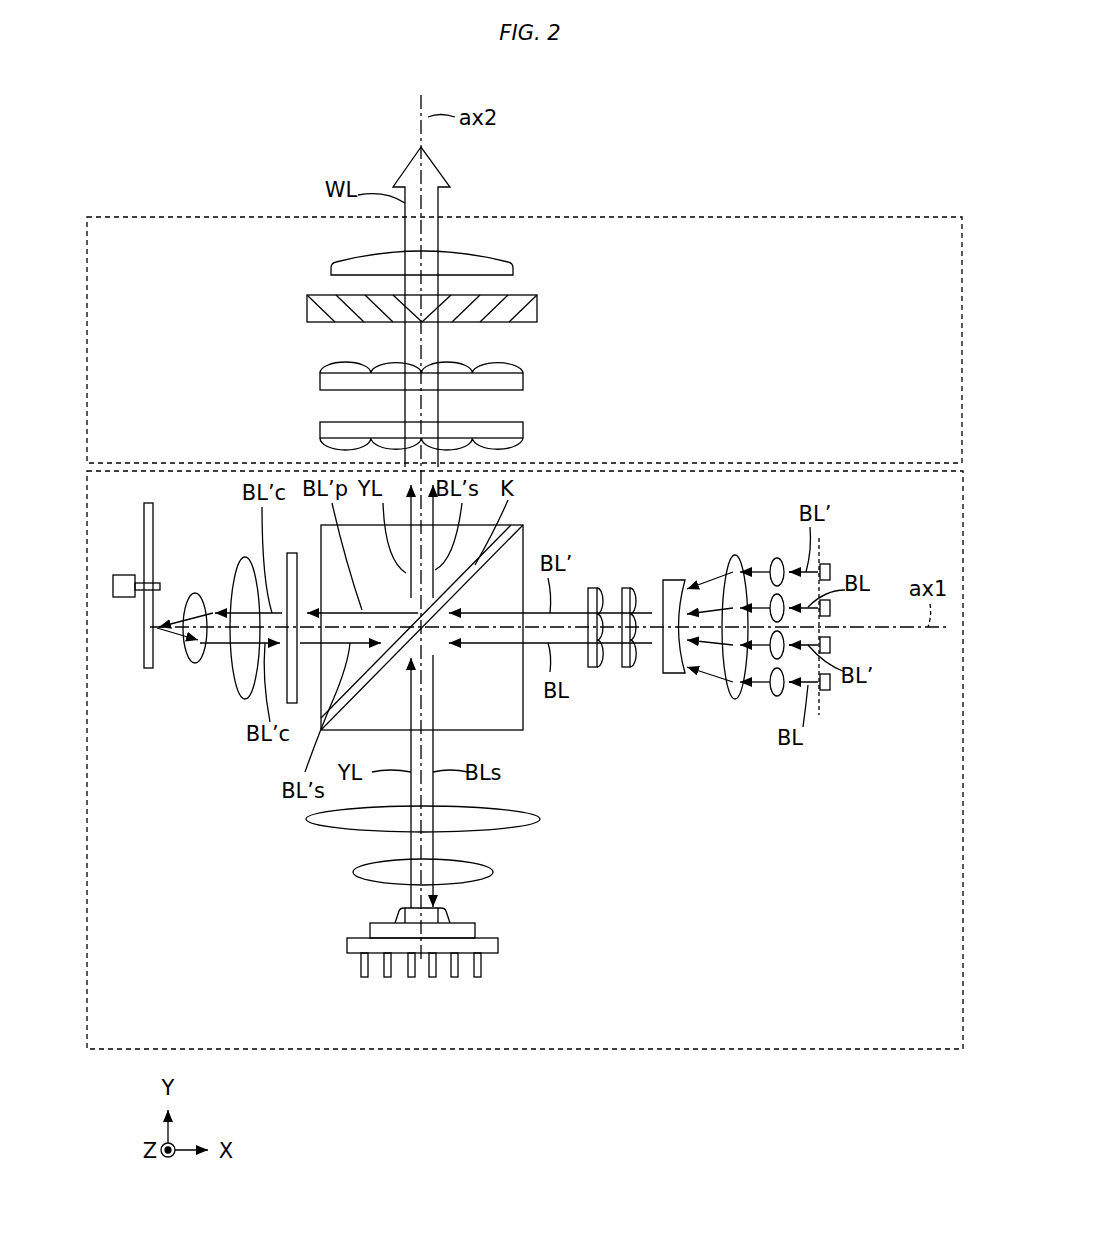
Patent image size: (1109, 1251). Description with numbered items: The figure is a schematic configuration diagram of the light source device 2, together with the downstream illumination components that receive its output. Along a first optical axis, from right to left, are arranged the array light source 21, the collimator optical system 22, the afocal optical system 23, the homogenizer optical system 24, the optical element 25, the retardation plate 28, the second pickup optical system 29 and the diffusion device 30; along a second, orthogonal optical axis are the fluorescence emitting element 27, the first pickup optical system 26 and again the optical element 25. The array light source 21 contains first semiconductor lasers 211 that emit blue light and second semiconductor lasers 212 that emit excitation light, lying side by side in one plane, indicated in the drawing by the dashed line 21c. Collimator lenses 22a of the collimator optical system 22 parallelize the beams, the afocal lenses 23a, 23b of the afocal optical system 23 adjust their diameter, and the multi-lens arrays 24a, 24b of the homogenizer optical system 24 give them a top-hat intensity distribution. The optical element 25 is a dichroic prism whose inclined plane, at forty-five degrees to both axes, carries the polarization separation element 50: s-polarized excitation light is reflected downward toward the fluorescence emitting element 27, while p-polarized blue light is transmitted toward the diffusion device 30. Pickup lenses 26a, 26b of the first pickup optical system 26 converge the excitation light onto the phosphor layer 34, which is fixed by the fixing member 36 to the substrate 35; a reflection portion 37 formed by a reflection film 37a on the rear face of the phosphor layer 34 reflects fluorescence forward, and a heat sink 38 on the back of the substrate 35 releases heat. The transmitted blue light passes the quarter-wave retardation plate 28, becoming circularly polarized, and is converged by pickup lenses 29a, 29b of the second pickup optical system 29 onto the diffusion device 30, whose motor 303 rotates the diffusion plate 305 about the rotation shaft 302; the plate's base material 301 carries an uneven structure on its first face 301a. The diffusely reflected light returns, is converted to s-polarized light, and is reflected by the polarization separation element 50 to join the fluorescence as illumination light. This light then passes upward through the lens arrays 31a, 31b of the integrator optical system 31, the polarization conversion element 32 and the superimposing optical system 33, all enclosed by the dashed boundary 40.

The light source device 2 is at (766, 1050).
The array light source 21 is at (854, 628).
The first semiconductor laser 211 is at (832, 568).
The second semiconductor laser 212 is at (832, 608).
The light emitting element plane 21c is at (823, 703).
The collimator optical system 22 is at (781, 548).
The collimator lens 22a is at (776, 556).
The afocal optical system 23 is at (709, 590).
The afocal lens 23a is at (735, 555).
The afocal lens 23b is at (680, 580).
The homogenizer optical system 24 is at (618, 584).
The multi-lens array 24a is at (628, 588).
The multi-lens array 24b is at (592, 588).
The optical element 25 is at (523, 722).
The polarization separation element 50 is at (500, 542).
The first pickup optical system 26 is at (489, 851).
The pickup lens 26a is at (540, 820).
The pickup lens 26b is at (493, 872).
The fluorescence emitting element 27 is at (439, 959).
The retardation plate 28 is at (292, 553).
The second pickup optical system 29 is at (192, 673).
The pickup lens 29a is at (236, 699).
The pickup lens 29b is at (190, 663).
The diffusion device 30 is at (107, 488).
The base material 301 is at (153, 537).
The first face 301a is at (153, 512).
The rotation shaft 302 is at (158, 584).
The motor 303 is at (125, 575).
The diffusion plate 305 is at (149, 495).
The integrator optical system 31 is at (489, 406).
The lens array 31a is at (464, 435).
The lens array 31b is at (523, 382).
The polarization conversion element 32 is at (537, 305).
The superimposing optical system 33 is at (497, 265).
The phosphor layer 34 is at (402, 915).
The substrate 35 is at (375, 930).
The fixing member 36 is at (446, 920).
The reflection portion 37 is at (436, 935).
The reflection film 37a is at (431, 927).
The heat sink 38 is at (350, 945).
The optical integration system 40 is at (852, 217).